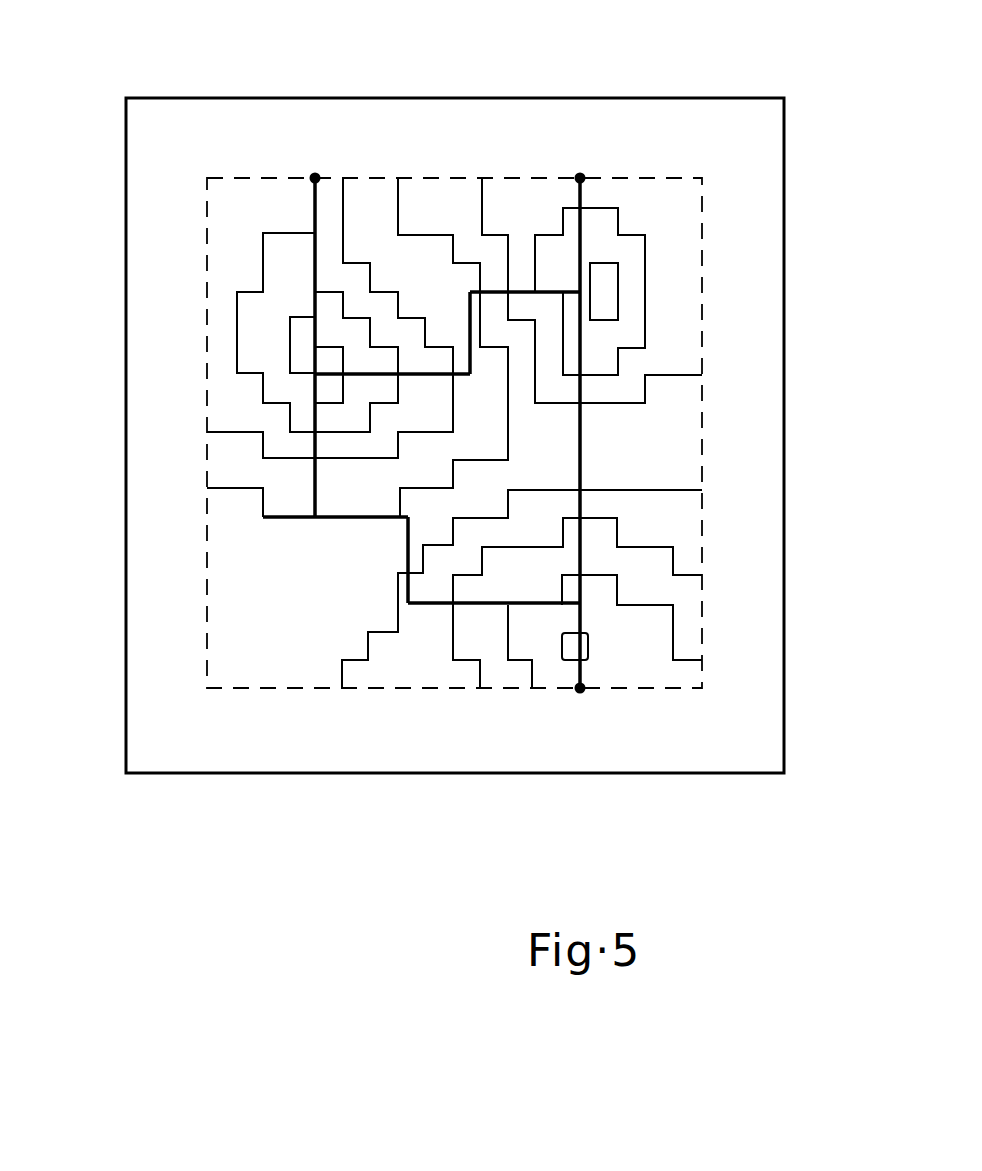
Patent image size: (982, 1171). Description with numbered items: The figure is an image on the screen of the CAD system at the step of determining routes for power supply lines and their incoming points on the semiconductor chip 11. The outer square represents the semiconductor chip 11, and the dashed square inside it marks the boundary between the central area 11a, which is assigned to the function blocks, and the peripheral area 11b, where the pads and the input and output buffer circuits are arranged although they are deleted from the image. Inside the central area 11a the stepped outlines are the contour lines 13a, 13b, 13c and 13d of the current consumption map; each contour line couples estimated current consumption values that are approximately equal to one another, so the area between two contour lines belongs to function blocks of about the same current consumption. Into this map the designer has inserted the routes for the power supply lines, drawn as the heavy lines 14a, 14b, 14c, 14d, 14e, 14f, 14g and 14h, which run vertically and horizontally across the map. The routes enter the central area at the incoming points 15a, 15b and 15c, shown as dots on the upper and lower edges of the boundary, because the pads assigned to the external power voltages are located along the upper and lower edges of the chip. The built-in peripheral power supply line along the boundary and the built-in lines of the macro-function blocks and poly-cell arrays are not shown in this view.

The semiconductor chip 11 is at (122, 628).
The central area 11a is at (533, 177).
The peripheral area 11b is at (767, 556).
The contour line 13a is at (367, 642).
The contour line 13b is at (233, 430).
The contour line 13c is at (237, 318).
The contour line 13d is at (305, 317).
The route for power supply line 14a is at (313, 203).
The route for power supply line 14b is at (413, 374).
The route for power supply line 14c is at (467, 313).
The route for power supply line 14d is at (523, 288).
The route for power supply line 14e is at (583, 197).
The route for power supply line 14f is at (427, 605).
The route for power supply line 14g is at (408, 548).
The route for power supply line 14h is at (363, 515).
The incoming point 15a is at (315, 174).
The incoming point 15b is at (582, 175).
The incoming point 15c is at (579, 693).